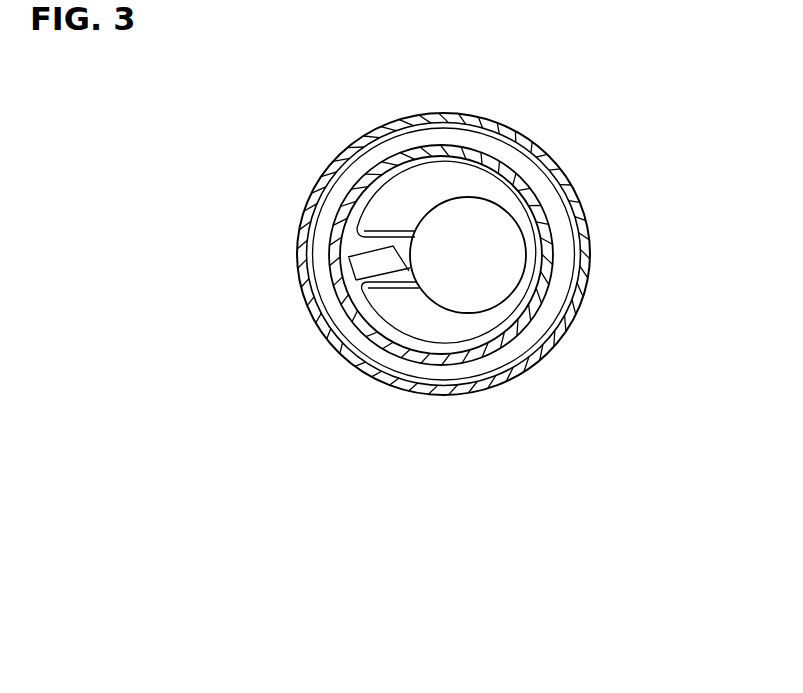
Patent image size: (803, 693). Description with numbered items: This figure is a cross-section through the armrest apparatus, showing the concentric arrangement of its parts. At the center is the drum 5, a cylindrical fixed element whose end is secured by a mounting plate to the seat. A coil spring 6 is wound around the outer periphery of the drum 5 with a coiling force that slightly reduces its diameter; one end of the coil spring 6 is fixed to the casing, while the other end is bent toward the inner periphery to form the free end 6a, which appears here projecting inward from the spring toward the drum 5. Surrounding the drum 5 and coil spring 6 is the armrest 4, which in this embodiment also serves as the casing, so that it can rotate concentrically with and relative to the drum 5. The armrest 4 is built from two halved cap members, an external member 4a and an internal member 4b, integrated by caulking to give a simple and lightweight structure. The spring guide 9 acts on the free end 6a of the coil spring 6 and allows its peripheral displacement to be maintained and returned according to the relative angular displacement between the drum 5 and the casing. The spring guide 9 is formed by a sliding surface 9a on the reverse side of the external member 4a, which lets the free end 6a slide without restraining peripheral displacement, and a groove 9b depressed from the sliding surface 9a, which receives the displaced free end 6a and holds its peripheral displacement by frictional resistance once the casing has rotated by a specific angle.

The armrest 4 is at (527, 254).
The external member 4a is at (575, 196).
The internal member 4b is at (580, 240).
The drum 5 is at (352, 230).
The coil spring 6 is at (341, 189).
The free end 6a is at (348, 263).
The spring guide 9 is at (293, 352).
The sliding surface 9a is at (412, 258).
The groove 9b is at (348, 258).